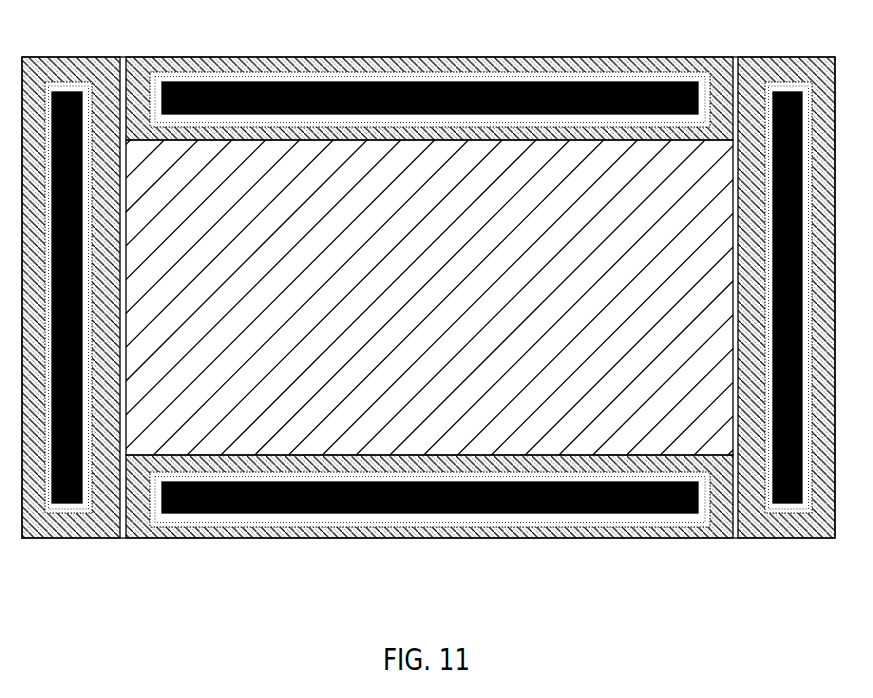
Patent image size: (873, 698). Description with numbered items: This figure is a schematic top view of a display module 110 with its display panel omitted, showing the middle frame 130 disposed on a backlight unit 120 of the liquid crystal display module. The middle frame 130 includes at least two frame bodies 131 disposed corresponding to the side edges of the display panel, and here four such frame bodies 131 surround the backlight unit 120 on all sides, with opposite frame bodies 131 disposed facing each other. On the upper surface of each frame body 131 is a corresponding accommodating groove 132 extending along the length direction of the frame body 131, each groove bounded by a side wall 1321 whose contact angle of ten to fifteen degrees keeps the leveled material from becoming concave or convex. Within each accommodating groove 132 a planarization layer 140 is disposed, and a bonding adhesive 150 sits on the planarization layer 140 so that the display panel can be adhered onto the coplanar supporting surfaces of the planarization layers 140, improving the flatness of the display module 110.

The display module 110 is at (108, 29).
The backlight unit 120 is at (693, 427).
The middle frame 130 is at (272, 532).
The frame body 131 is at (429, 333).
The accommodating groove 132 is at (389, 526).
The side wall 1321 is at (475, 520).
The planarization layer 140 is at (583, 520).
The bonding adhesive 150 is at (182, 513).